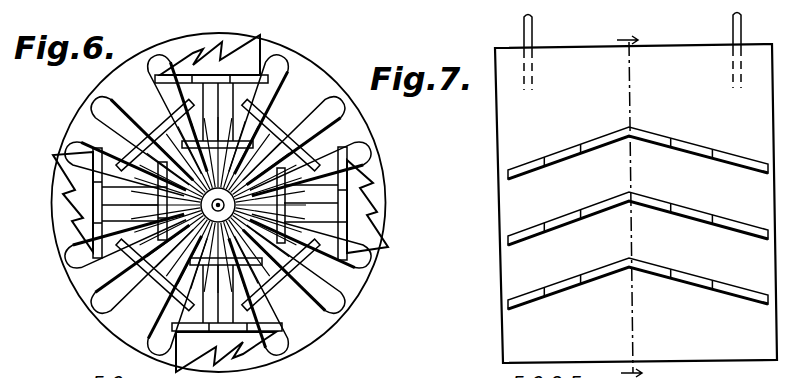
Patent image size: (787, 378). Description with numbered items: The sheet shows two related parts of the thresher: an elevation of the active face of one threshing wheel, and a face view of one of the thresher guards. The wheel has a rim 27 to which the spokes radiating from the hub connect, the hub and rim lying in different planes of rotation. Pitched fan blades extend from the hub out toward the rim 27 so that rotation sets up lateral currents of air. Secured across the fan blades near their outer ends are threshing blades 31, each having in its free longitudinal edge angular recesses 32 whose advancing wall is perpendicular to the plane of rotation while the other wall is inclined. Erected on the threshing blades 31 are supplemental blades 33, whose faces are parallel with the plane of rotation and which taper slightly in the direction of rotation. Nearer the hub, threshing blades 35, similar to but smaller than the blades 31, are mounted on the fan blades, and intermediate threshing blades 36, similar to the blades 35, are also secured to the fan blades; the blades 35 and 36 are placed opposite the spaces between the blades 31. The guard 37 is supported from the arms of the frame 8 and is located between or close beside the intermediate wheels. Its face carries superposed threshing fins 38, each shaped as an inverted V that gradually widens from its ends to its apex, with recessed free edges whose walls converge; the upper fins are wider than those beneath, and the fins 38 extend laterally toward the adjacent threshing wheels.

In FIG. 6, the rim 27 is at (310, 345).
In FIG. 6, the threshing blades 31 is at (385, 182).
In FIG. 6, the angular recesses 32 is at (387, 222).
In FIG. 6, the supplemental blades 33 is at (85, 158).
In FIG. 6, the threshing blades 35 is at (153, 207).
In FIG. 6, the intermediate threshing blades 36 is at (166, 285).
In FIG. 7, the guard 37 is at (512, 130).
In FIG. 7, the threshing fins 38 is at (512, 302).
In FIG. 7, the frame 8 is at (629, 194).